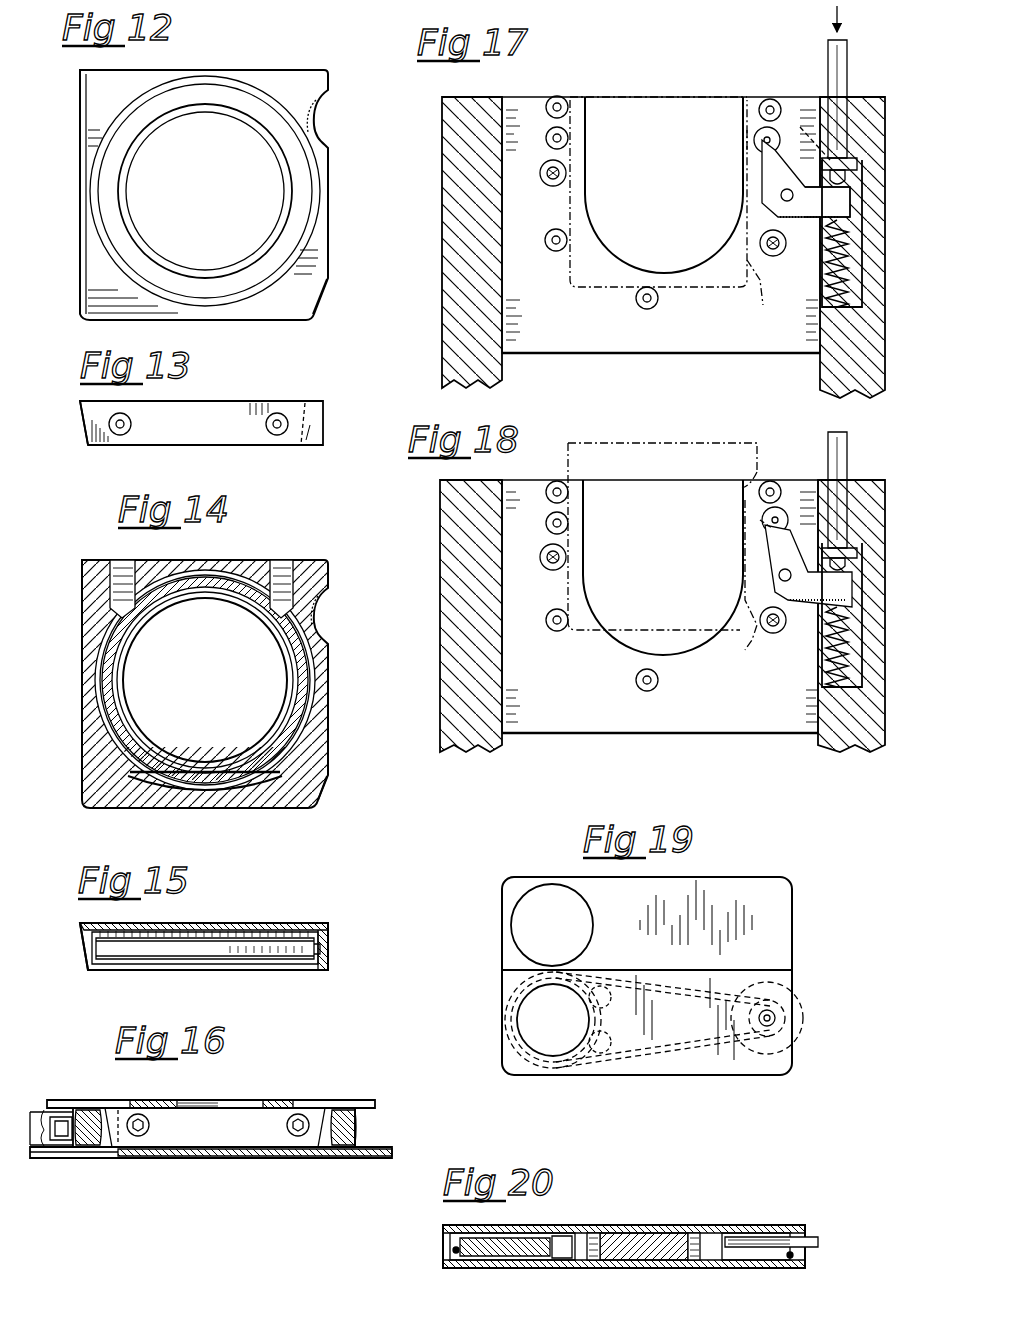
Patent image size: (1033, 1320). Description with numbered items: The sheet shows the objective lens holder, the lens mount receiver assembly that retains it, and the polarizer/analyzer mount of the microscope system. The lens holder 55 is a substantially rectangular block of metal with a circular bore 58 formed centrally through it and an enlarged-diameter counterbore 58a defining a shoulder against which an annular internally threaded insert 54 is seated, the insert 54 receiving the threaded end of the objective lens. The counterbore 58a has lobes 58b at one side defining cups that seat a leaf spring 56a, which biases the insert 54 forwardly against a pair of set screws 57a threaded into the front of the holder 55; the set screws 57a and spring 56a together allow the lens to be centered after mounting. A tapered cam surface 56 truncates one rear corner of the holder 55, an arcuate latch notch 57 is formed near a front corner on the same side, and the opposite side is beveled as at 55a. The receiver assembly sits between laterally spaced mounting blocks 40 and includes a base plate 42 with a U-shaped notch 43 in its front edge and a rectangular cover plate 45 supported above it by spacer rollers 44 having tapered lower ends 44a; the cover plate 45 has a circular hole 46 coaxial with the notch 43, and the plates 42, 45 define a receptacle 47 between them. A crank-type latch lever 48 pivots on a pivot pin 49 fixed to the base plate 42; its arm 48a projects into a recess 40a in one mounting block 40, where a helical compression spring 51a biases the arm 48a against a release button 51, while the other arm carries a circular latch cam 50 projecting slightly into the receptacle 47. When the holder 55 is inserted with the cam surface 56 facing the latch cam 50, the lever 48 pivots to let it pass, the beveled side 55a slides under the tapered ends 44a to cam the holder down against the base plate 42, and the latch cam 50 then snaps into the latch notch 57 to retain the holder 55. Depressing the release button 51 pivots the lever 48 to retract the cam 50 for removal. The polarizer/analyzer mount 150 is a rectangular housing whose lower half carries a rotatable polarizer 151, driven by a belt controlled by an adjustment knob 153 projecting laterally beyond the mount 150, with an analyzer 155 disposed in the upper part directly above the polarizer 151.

In FIG. 17, the mounting blocks 40 is at (452, 342).
In FIG. 18, the mounting blocks 40 is at (464, 740).
In FIG. 17, the recess 40a is at (855, 160).
In FIG. 18, the recess 40a is at (842, 615).
In FIG. 16, the base plate 42 is at (100, 1158).
In FIG. 17, the base plate 42 is at (622, 356).
In FIG. 18, the base plate 42 is at (580, 738).
In FIG. 16, the U-shaped notch 43 is at (132, 1158).
In FIG. 17, the U-shaped notch 43 is at (700, 262).
In FIG. 18, the U-shaped notch 43 is at (704, 644).
In FIG. 16, the spacer rollers 44 is at (88, 1118).
In FIG. 17, the spacer rollers 44 is at (636, 298).
In FIG. 18, the spacer rollers 44 is at (548, 504).
In FIG. 16, the tapered lower ends 44a is at (360, 1140).
In FIG. 16, the cover plate 45 is at (268, 1100).
In FIG. 16, the circular hole 46 is at (186, 1100).
In FIG. 17, the receptacle 47 is at (666, 128).
In FIG. 17, the latch lever 48 is at (770, 182).
In FIG. 18, the latch lever 48 is at (802, 607).
In FIG. 17, the latch lever arm 48a is at (802, 220).
In FIG. 17, the pivot pin 49 is at (781, 197).
In FIG. 18, the pivot pin 49 is at (779, 577).
In FIG. 16, the latch cam 50 is at (62, 1142).
In FIG. 17, the latch cam 50 is at (754, 142).
In FIG. 18, the latch cam 50 is at (762, 522).
In FIG. 17, the release button 51 is at (828, 56).
In FIG. 18, the release button 51 is at (845, 455).
In FIG. 17, the helical compression spring 51a is at (824, 296).
In FIG. 18, the helical compression spring 51a is at (837, 647).
In FIG. 12, the threaded insert 54 is at (268, 246).
In FIG. 14, the threaded insert 54 is at (283, 688).
In FIG. 15, the threaded insert 54 is at (178, 950).
In FIG. 12, the lens holder 55 is at (75, 126).
In FIG. 13, the lens holder 55 is at (237, 394).
In FIG. 14, the lens holder 55 is at (214, 558).
In FIG. 15, the lens holder 55 is at (292, 916).
In FIG. 16, the lens holder 55 is at (246, 1128).
In FIG. 17, the lens holder 55 is at (618, 94).
In FIG. 18, the lens holder 55 is at (632, 446).
In FIG. 12, the beveled side 55a is at (80, 282).
In FIG. 13, the beveled side 55a is at (80, 436).
In FIG. 15, the beveled side 55a is at (84, 946).
In FIG. 16, the beveled side 55a is at (342, 1148).
In FIG. 12, the tapered cam surface 56 is at (322, 290).
In FIG. 14, the tapered cam surface 56 is at (324, 786).
In FIG. 17, the tapered cam surface 56 is at (760, 284).
In FIG. 18, the tapered cam surface 56 is at (746, 640).
In FIG. 14, the leaf spring 56a is at (150, 782).
In FIG. 12, the latch notch 57 is at (320, 125).
In FIG. 13, the latch notch 57 is at (306, 442).
In FIG. 14, the latch notch 57 is at (330, 614).
In FIG. 18, the latch notch 57 is at (758, 478).
In FIG. 13, the set screws 57a is at (267, 428).
In FIG. 14, the set screws 57a is at (122, 562).
In FIG. 15, the circular bore 58 is at (288, 932).
In FIG. 15, the counterbore 58a is at (326, 950).
In FIG. 14, the lobes 58b is at (266, 778).
In FIG. 19, the polarizer/analyzer mount 150 is at (490, 892).
In FIG. 20, the polarizer/analyzer mount 150 is at (658, 1222).
In FIG. 19, the polarizer 151 is at (532, 1030).
In FIG. 20, the polarizer 151 is at (514, 1268).
In FIG. 19, the adjustment knob 153 is at (793, 1036).
In FIG. 20, the adjustment knob 153 is at (810, 1236).
In FIG. 19, the analyzer 155 is at (526, 928).